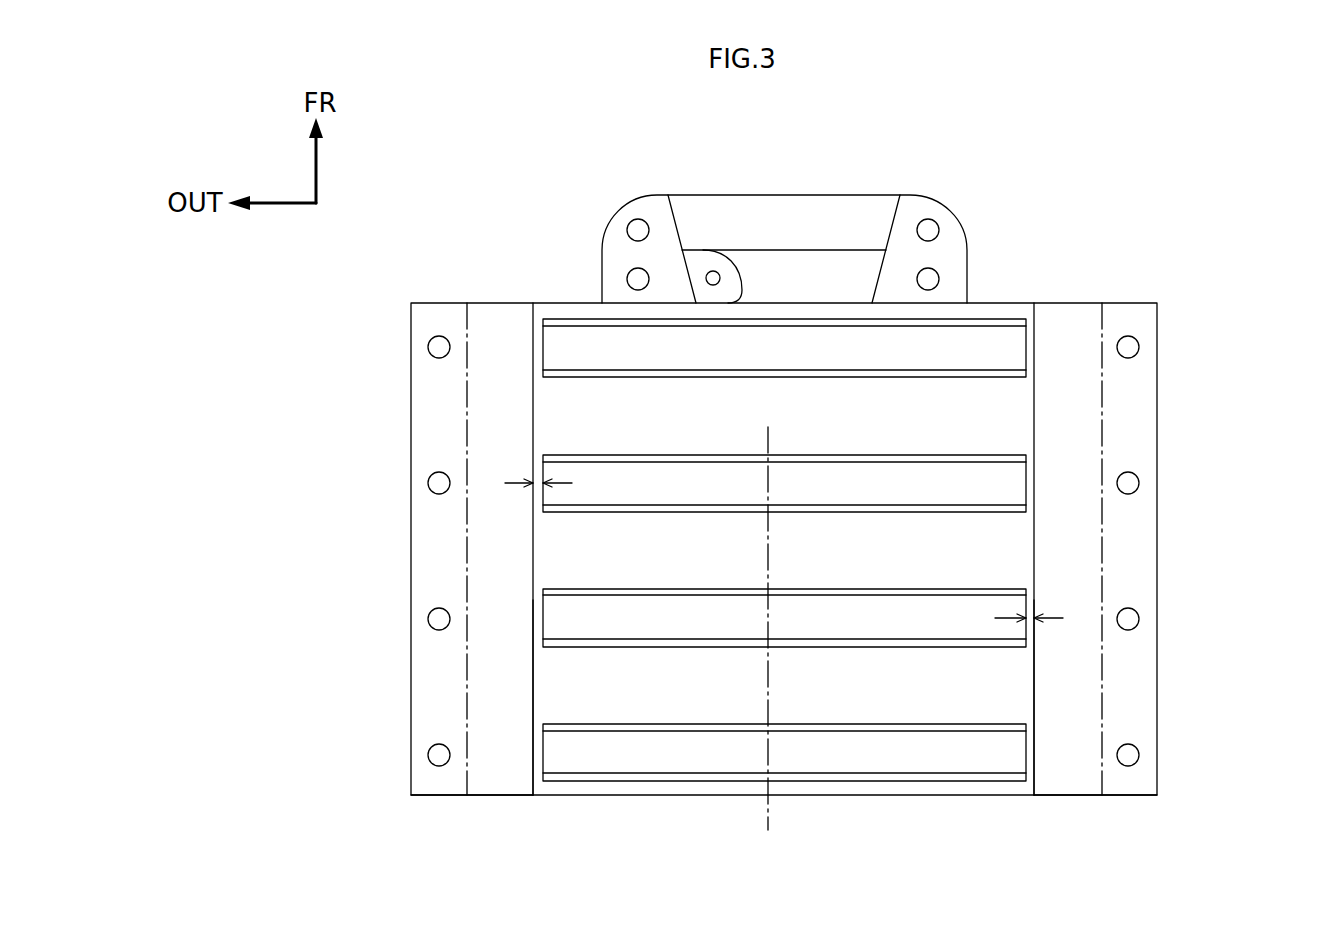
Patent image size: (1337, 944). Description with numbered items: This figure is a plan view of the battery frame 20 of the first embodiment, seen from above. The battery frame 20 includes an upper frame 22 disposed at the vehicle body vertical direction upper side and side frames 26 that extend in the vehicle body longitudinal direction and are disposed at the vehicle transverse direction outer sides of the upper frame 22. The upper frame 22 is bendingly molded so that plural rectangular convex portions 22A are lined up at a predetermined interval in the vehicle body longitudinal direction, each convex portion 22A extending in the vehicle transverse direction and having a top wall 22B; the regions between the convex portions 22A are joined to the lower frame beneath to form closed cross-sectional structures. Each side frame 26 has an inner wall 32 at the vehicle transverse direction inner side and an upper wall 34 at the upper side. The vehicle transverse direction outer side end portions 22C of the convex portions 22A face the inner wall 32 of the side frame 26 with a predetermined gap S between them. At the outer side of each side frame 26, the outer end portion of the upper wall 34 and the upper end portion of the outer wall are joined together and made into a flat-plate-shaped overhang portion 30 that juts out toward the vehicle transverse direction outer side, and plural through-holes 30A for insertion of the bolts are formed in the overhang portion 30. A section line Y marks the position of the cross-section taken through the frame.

The battery frame 20 is at (913, 172).
The upper frame 22 is at (584, 302).
The convex portion 22A is at (988, 318).
The top wall 22B is at (670, 752).
The vehicle transverse direction outer side end portion 22C is at (1026, 472).
The side frame 26 is at (505, 302).
The overhang portion 30 is at (428, 438).
The through-hole 30A is at (1122, 357).
The inner wall 32 is at (535, 670).
The upper wall 34 is at (500, 770).
The gap S is at (538, 478).
The section line Y is at (768, 429).